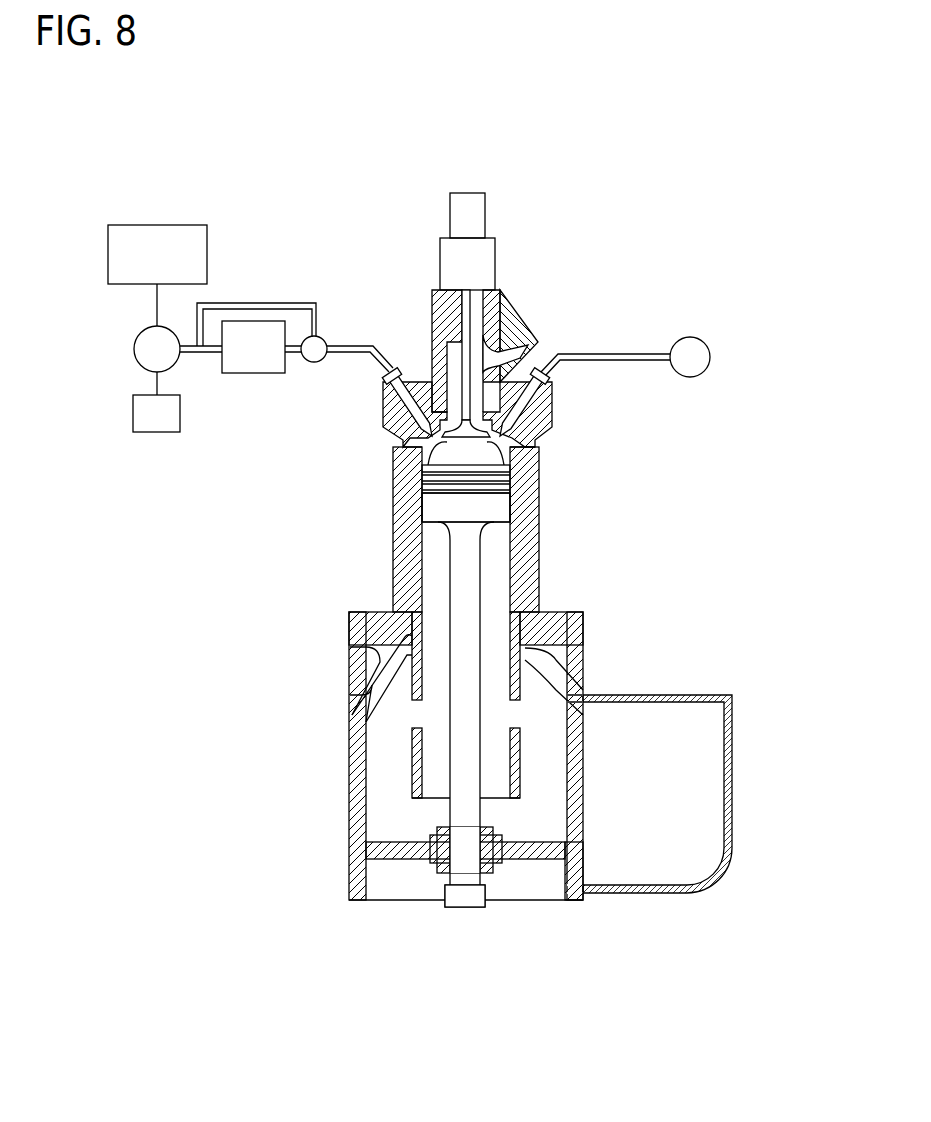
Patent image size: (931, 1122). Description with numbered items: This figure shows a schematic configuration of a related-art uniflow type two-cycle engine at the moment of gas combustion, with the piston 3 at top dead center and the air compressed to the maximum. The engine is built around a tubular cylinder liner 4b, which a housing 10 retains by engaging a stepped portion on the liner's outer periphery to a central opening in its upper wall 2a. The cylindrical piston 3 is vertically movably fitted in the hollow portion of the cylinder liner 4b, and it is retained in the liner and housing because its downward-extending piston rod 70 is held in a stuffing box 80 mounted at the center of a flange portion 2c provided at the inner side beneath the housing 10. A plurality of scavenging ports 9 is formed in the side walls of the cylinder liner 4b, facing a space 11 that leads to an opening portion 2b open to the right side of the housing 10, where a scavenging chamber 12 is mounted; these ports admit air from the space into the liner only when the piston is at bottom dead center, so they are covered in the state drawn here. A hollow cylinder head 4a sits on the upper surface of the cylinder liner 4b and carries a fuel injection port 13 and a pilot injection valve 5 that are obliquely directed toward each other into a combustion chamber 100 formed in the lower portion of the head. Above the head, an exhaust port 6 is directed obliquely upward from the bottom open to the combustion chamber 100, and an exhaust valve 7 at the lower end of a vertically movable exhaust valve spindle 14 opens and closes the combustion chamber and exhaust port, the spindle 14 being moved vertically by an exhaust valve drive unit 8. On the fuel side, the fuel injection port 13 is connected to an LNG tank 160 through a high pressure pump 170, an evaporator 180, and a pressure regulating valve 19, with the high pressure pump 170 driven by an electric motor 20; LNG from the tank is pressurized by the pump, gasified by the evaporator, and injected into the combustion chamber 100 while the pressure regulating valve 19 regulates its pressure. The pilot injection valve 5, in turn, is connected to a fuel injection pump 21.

The LNG tank 160 is at (157, 225).
The high pressure pump 170 is at (134, 349).
The electric motor 20 is at (157, 432).
The evaporator 180 is at (255, 367).
The pressure regulating valve 19 is at (322, 338).
The fuel injection pump 21 is at (690, 337).
The exhaust valve drive unit 8 is at (455, 260).
The pilot injection valve 5 is at (500, 291).
The exhaust port 6 is at (482, 372).
The valve 14 is at (465, 357).
The fuel injection port 13 is at (385, 378).
The scavenging chamber 12 is at (547, 358).
The cylinder head 4a is at (385, 422).
The cylinder liner 4b is at (525, 537).
The combustion chamber 100 is at (447, 443).
The exhaust valve 7 is at (487, 443).
The piston 3 is at (433, 510).
The piston rod 70 is at (463, 577).
The housing 10 is at (499, 753).
The upper wall 2a is at (560, 610).
The opening portion 2b is at (575, 718).
The flange portion 2c is at (540, 855).
The scavenging ports 9 is at (417, 713).
The space 11 is at (567, 818).
The stuffing box 80 is at (432, 850).